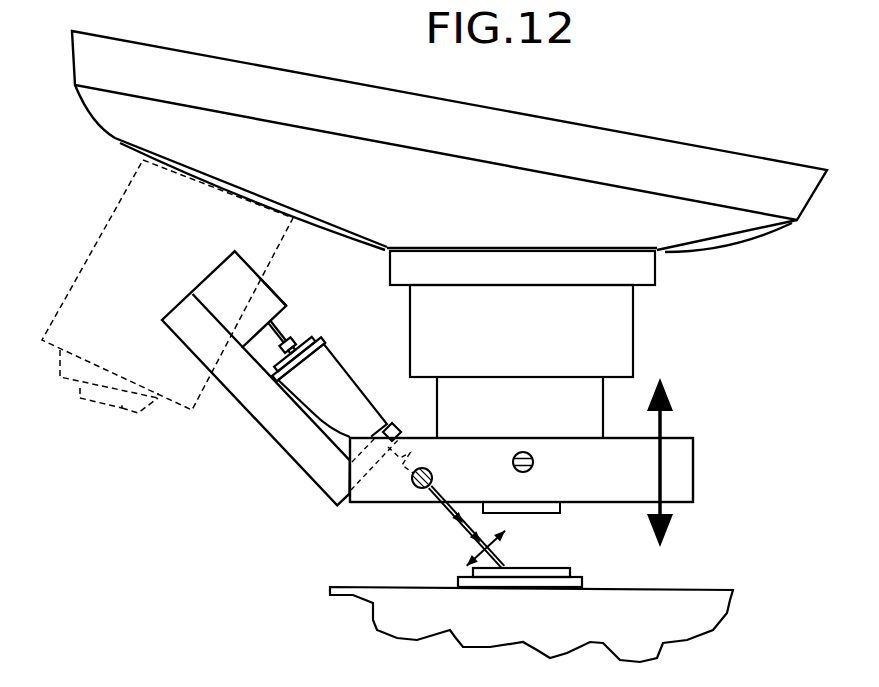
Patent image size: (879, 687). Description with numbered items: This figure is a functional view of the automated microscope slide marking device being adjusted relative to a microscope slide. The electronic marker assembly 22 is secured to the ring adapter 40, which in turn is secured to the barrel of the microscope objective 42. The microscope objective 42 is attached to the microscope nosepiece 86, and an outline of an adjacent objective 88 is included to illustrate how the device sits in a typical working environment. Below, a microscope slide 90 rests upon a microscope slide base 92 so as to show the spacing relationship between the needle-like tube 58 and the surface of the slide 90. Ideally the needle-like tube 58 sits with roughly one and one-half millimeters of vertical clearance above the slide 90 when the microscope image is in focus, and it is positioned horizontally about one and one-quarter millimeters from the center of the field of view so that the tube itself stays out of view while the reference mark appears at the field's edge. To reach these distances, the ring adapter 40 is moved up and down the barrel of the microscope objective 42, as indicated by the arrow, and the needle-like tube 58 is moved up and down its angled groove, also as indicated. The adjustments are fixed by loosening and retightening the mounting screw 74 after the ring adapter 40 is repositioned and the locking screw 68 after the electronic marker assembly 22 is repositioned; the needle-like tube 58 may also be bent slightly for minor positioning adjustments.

The microscope nosepiece 86 is at (737, 165).
The adjacent objective 88 is at (109, 218).
The electronic marker assembly 22 is at (263, 446).
The ring adapter 40 is at (686, 470).
The microscope objective 42 is at (595, 400).
The locking screw 68 is at (432, 470).
The mounting screw 74 is at (536, 462).
The needle-like tube 58 is at (456, 519).
The microscope slide 90 is at (458, 582).
The microscope slide base 92 is at (390, 618).